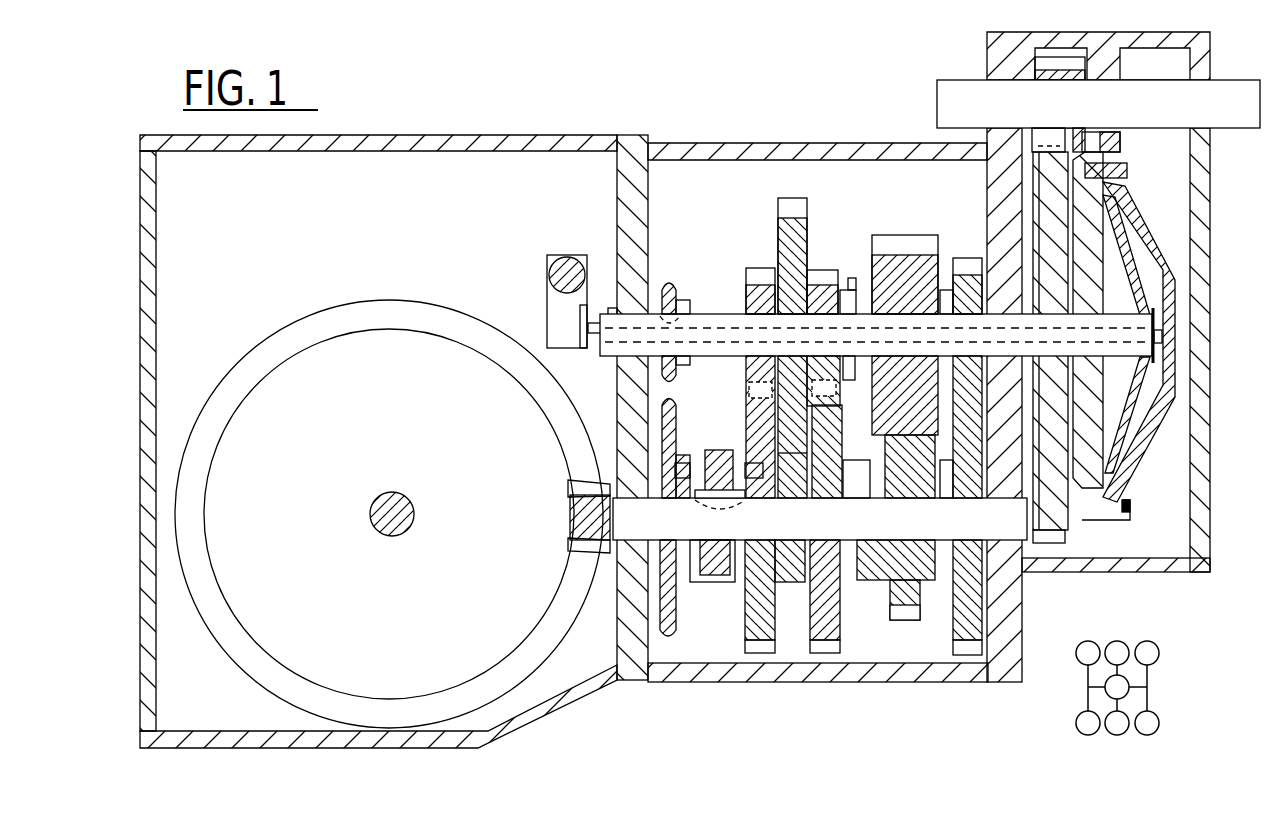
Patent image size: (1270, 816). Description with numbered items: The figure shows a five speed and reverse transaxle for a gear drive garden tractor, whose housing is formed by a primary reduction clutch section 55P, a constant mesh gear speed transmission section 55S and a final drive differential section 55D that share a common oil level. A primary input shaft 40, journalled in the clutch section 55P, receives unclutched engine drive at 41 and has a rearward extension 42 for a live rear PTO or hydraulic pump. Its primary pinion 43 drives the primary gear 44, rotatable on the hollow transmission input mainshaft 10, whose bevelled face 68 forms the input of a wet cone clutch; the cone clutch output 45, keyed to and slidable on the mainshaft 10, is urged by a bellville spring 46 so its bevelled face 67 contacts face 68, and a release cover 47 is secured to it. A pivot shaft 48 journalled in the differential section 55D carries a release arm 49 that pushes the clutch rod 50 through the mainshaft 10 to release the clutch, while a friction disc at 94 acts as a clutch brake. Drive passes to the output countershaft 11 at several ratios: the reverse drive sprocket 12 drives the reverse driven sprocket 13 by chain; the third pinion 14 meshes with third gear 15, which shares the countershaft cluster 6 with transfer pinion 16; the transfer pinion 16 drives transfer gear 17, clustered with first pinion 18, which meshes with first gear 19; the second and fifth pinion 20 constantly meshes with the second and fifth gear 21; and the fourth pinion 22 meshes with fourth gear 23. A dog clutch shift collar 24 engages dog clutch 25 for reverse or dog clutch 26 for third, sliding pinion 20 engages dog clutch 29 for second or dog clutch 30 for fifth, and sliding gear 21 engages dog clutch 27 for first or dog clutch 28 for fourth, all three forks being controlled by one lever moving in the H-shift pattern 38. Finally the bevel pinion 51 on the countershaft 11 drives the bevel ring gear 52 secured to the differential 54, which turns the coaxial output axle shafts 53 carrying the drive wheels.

The countershaft cluster 6 is at (765, 500).
The transmission input mainshaft 10 is at (712, 318).
The transmission output countershaft 11 is at (820, 519).
The reverse drive sprocket 12 is at (666, 280).
The reverse driven sprocket 13 is at (677, 400).
The third pinion 14 is at (758, 268).
The third gear 15 is at (770, 652).
The transfer pinion 16 is at (790, 583).
The transfer gear 17 is at (800, 208).
The first pinion 18 is at (820, 270).
The first gear 19 is at (836, 652).
The second and fifth pinion 20 is at (918, 242).
The second and fifth gear 21 is at (891, 610).
The fourth pinion 22 is at (967, 260).
The fourth gear 23 is at (980, 648).
The dog clutch shift collar 24 is at (708, 570).
The dog clutch 25 is at (693, 465).
The dog clutch 26 is at (740, 465).
The dog clutch 27 is at (848, 475).
The dog clutch 28 is at (944, 478).
The dog clutch 29 is at (846, 300).
The dog clutch 30 is at (943, 296).
The H-shift pattern 38 is at (1090, 640).
The primary input shaft 40 is at (1130, 88).
The engine drive input 41 is at (1245, 98).
The rearward extension 42 is at (953, 95).
The primary pinion 43 is at (1068, 68).
The primary gear 44 is at (1065, 537).
The cone clutch output 45 is at (1132, 510).
The bellville spring 46 is at (1128, 398).
The release cover 47 is at (1135, 462).
The pivot shaft 48 is at (560, 258).
The release arm 49 is at (547, 328).
The clutch rod 50 is at (595, 340).
The bevel pinion 51 is at (568, 541).
The bevel ring gear 52 is at (562, 588).
The output axle shafts 53 is at (416, 516).
The differential 54 is at (292, 632).
The final drive differential section 55D is at (497, 142).
The primary reduction clutch section 55P is at (1090, 568).
The constant mesh gear speed transmission section 55S is at (813, 683).
The bevelled face 67 is at (1120, 168).
The bevelled face 68 is at (1062, 178).
The friction disc 94 is at (1188, 308).